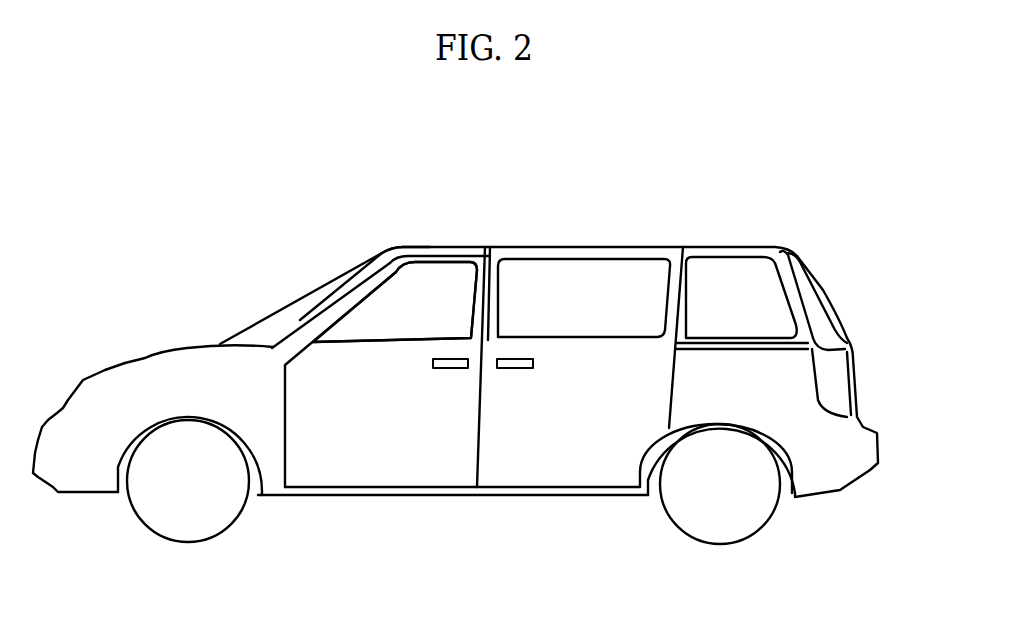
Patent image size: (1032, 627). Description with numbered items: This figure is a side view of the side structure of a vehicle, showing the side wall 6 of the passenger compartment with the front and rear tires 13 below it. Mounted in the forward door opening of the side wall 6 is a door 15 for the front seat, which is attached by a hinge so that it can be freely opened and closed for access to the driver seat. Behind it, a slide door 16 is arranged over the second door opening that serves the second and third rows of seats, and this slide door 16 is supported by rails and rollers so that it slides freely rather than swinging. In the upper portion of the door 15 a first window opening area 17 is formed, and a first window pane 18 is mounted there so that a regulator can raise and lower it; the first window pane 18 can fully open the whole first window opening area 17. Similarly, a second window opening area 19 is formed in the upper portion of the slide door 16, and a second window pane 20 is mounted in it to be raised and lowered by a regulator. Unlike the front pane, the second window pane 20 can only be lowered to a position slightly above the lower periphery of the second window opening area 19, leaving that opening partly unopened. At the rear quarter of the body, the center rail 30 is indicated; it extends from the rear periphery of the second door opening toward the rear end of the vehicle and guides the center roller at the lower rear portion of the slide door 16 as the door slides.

The side wall 6 is at (238, 367).
The tires 13 is at (200, 520).
The door for the front seat 15 is at (363, 440).
The slide door 16 is at (548, 447).
The first window opening area 17 is at (400, 270).
The first window pane 18 is at (444, 298).
The second window opening area 19 is at (541, 258).
The second window pane 20 is at (627, 292).
The center rail 30 is at (857, 348).